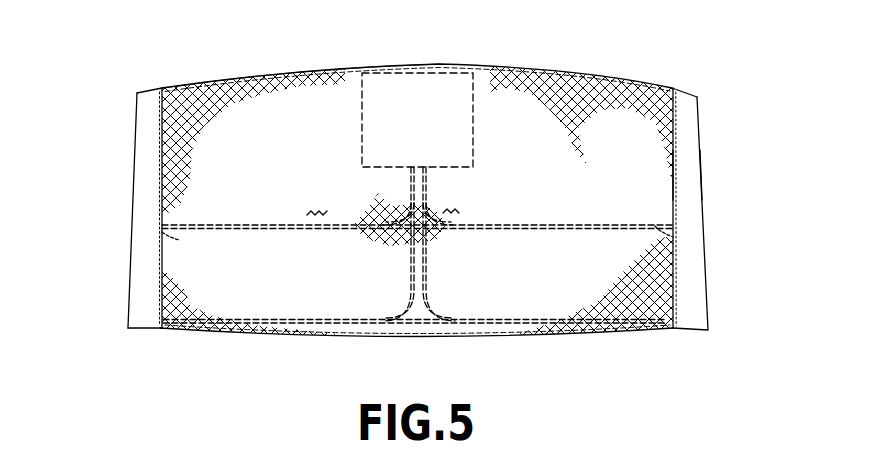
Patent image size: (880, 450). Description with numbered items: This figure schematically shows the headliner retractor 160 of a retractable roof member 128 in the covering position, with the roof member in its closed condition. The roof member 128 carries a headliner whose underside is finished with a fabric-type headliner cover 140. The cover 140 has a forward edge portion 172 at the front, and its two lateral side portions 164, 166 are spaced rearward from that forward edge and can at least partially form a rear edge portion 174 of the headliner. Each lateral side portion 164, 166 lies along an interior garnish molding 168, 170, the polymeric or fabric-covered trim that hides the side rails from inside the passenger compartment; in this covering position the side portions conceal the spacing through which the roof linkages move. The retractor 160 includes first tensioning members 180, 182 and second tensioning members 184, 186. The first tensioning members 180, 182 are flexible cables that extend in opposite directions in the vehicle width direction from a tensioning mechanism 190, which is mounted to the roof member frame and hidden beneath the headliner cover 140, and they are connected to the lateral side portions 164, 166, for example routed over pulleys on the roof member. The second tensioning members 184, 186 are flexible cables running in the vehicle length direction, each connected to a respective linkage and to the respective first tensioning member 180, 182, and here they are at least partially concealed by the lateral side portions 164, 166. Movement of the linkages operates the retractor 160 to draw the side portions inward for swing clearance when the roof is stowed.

The retractable roof member 128 is at (488, 83).
The headliner cover 140 is at (657, 183).
The retractor 160 is at (320, 119).
The lateral side portion 164 is at (653, 257).
The lateral side portion 166 is at (160, 257).
The interior garnish molding 168 is at (685, 135).
The interior garnish molding 170 is at (150, 140).
The forward edge portion 172 is at (600, 80).
The rear edge portion 174 is at (327, 333).
The first tensioning member 180 is at (500, 225).
The first tensioning member 182 is at (240, 224).
The second tensioning member 184 is at (673, 237).
The second tensioning member 186 is at (167, 243).
The tensioning mechanism 190 is at (410, 73).